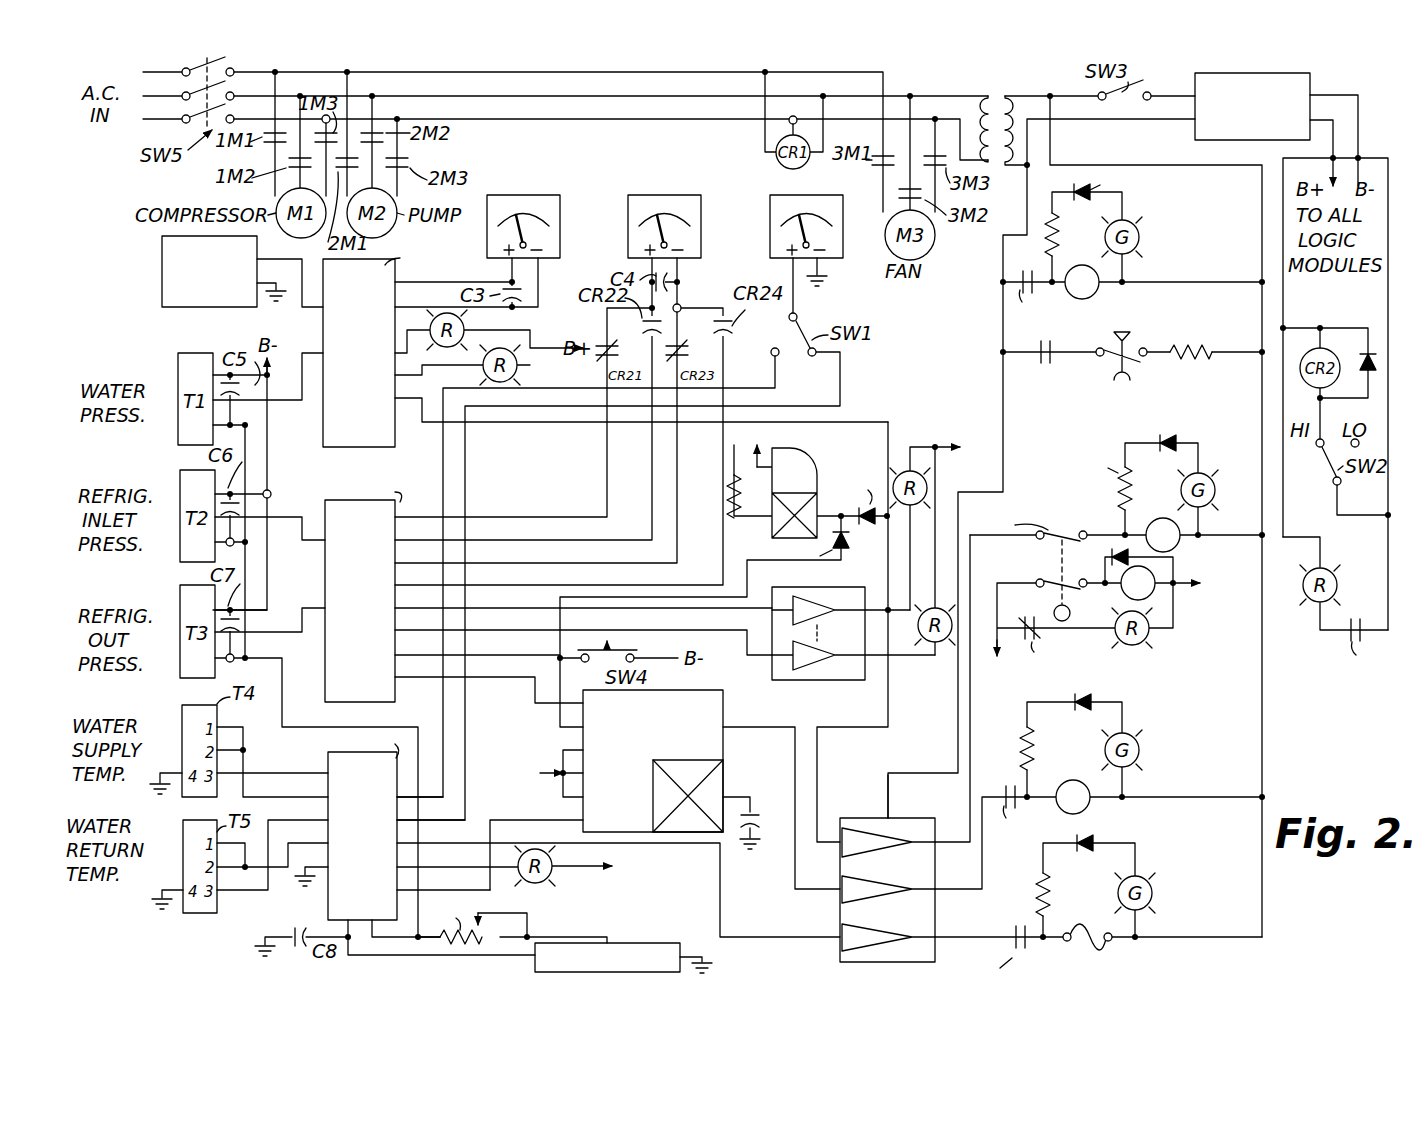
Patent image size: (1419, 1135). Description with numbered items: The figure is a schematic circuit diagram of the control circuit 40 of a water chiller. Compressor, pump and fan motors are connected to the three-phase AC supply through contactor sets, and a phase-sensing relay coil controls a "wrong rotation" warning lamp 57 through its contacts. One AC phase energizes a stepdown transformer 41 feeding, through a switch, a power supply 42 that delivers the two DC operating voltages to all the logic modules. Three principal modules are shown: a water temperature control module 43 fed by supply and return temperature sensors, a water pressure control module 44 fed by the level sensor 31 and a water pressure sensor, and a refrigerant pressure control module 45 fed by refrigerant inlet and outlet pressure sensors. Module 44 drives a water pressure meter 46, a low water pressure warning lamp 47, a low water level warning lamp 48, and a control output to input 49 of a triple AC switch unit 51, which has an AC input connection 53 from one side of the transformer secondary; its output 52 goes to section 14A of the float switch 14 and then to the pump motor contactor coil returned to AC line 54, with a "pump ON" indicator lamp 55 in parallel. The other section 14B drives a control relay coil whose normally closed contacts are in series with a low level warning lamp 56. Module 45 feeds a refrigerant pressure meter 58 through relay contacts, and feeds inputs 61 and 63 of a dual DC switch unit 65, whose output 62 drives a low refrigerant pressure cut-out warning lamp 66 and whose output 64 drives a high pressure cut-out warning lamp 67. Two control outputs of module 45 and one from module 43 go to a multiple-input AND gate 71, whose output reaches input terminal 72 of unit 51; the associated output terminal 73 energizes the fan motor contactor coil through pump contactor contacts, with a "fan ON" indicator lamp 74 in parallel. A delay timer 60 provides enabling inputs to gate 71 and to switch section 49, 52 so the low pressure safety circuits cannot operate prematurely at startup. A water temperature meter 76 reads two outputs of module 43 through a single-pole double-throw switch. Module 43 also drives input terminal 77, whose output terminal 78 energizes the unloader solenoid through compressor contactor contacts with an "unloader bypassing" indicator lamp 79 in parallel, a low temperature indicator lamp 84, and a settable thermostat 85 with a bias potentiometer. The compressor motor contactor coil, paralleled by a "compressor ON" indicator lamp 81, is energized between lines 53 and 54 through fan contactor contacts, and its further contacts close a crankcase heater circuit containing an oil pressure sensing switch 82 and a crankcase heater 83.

The float switch 14 is at (1090, 515).
The float switch section 14A is at (1026, 553).
The float switch section 14B is at (1023, 602).
The level sensor 31 is at (185, 310).
The control circuit 40 is at (312, 897).
The stepdown transformer 41 is at (1002, 108).
The power supply circuit 42 is at (1312, 86).
The water temperature control module 43 is at (328, 764).
The water pressure control module 44 is at (323, 424).
The refrigerant pressure control module 45 is at (325, 671).
The water pressure meter 46 is at (561, 237).
The low water pressure warning lamp 47 is at (432, 328).
The low water level warning lamp 48 is at (484, 371).
The input of triple AC switch unit 49 is at (832, 852).
The triple AC switch unit 51 is at (856, 803).
The output of triple AC switch 52 is at (909, 868).
The AC input connection 53 is at (958, 746).
The AC line 54 is at (1131, 353).
The pump ON indicator lamp 55 is at (1116, 522).
The low level warning lamp 56 is at (1117, 617).
The wrong rotation warning lamp 57 is at (1339, 586).
The refrigerant pressure meter 58 is at (703, 237).
The delay timer 60 is at (808, 482).
The input of dual DC switch unit 61 is at (746, 600).
The output conductor 62 is at (890, 596).
The input of dual DC switch unit 63 is at (748, 663).
The output of dual DC switch unit 64 is at (851, 696).
The dual DC switch unit 65 is at (837, 592).
The low refrigerant pressure cut-out warning lamp 66 is at (928, 489).
The high pressure cut-out warning lamp 67 is at (918, 630).
The multiple-input AND gate 71 is at (724, 698).
The input terminal of triple AC switch 72 is at (828, 895).
The output terminal of triple AC switch 73 is at (960, 885).
The fan ON indicator lamp 74 is at (1140, 756).
The water temperature meter 76 is at (843, 250).
The input terminal of triple AC switch 77 is at (824, 942).
The output terminal of triple AC switch 78 is at (955, 925).
The unloader bypassing indicator lamp 79 is at (1142, 878).
The compressor ON indicator lamp 81 is at (1143, 244).
The oil pressure sensing switch 82 is at (1152, 317).
The crankcase heater 83 is at (1210, 331).
The low temperature indicator lamp 84 is at (540, 884).
The settable thermostat 85 is at (642, 943).